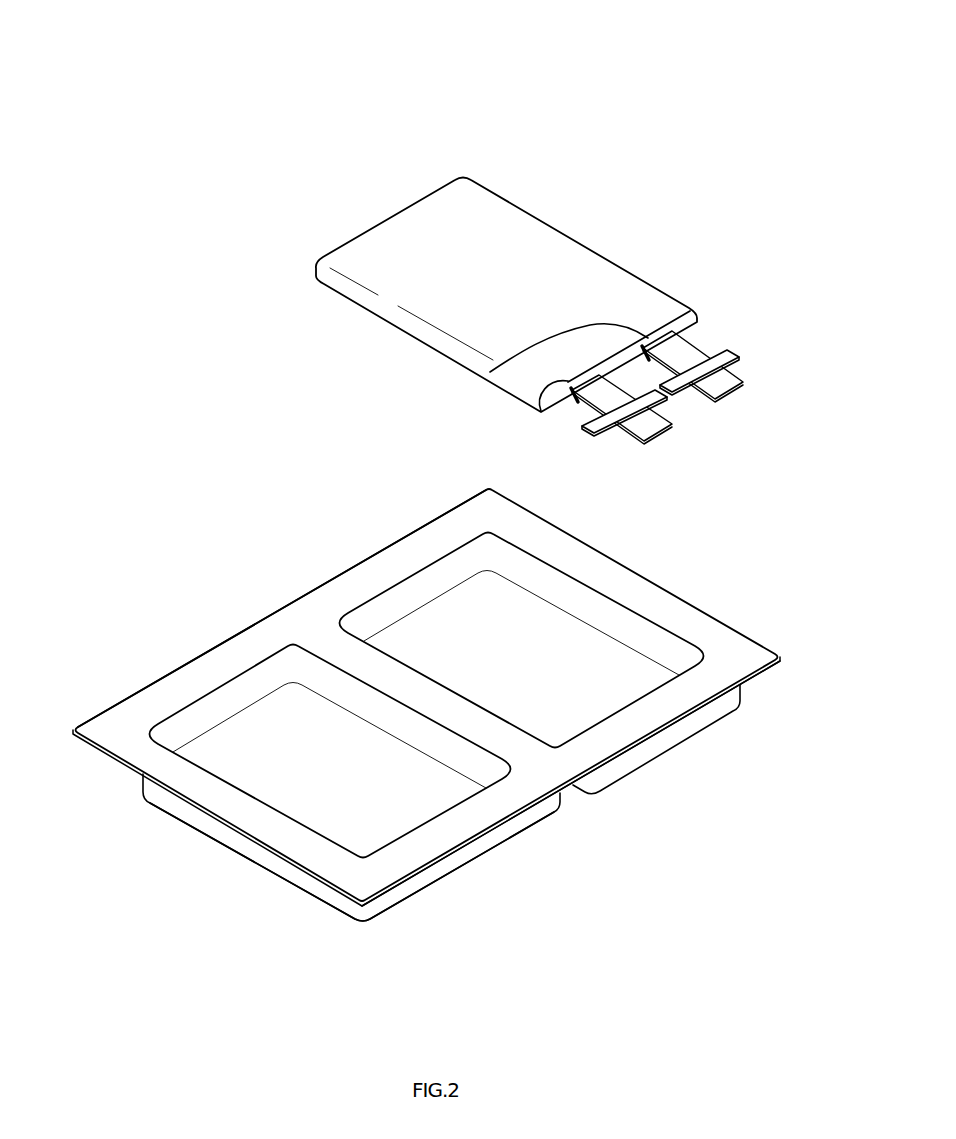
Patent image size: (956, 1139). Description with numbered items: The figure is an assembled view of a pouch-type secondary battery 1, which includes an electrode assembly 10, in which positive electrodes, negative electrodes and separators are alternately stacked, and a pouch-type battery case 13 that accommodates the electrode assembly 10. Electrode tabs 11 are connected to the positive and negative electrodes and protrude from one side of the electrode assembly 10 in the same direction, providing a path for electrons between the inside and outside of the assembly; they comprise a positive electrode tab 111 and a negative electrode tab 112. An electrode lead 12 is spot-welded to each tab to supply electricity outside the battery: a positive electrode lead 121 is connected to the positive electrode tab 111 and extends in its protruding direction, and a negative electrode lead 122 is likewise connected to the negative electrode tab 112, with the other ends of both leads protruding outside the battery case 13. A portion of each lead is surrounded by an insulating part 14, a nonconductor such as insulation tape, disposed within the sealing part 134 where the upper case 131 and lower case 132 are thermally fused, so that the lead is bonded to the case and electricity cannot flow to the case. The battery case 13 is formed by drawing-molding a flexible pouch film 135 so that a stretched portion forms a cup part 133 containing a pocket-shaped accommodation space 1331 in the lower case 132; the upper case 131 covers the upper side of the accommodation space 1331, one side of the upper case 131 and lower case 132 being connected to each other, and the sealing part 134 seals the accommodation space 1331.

The pouch-type secondary battery 1 is at (457, 87).
The electrode assembly 10 is at (643, 218).
The electrode tabs 11 is at (401, 383).
The positive electrode tab 111 is at (568, 384).
The negative electrode tab 112 is at (643, 360).
The electrode lead 12 is at (792, 445).
The positive electrode lead 121 is at (727, 388).
The negative electrode lead 122 is at (653, 427).
The battery case 13 is at (750, 808).
The upper case 131 is at (467, 825).
The lower case 132 is at (670, 713).
The cup part 133 is at (200, 820).
The accommodation space 1331 is at (395, 826).
The sealing part 134 is at (550, 783).
The pouch film 135 is at (280, 611).
The insulating part 14 is at (712, 344).